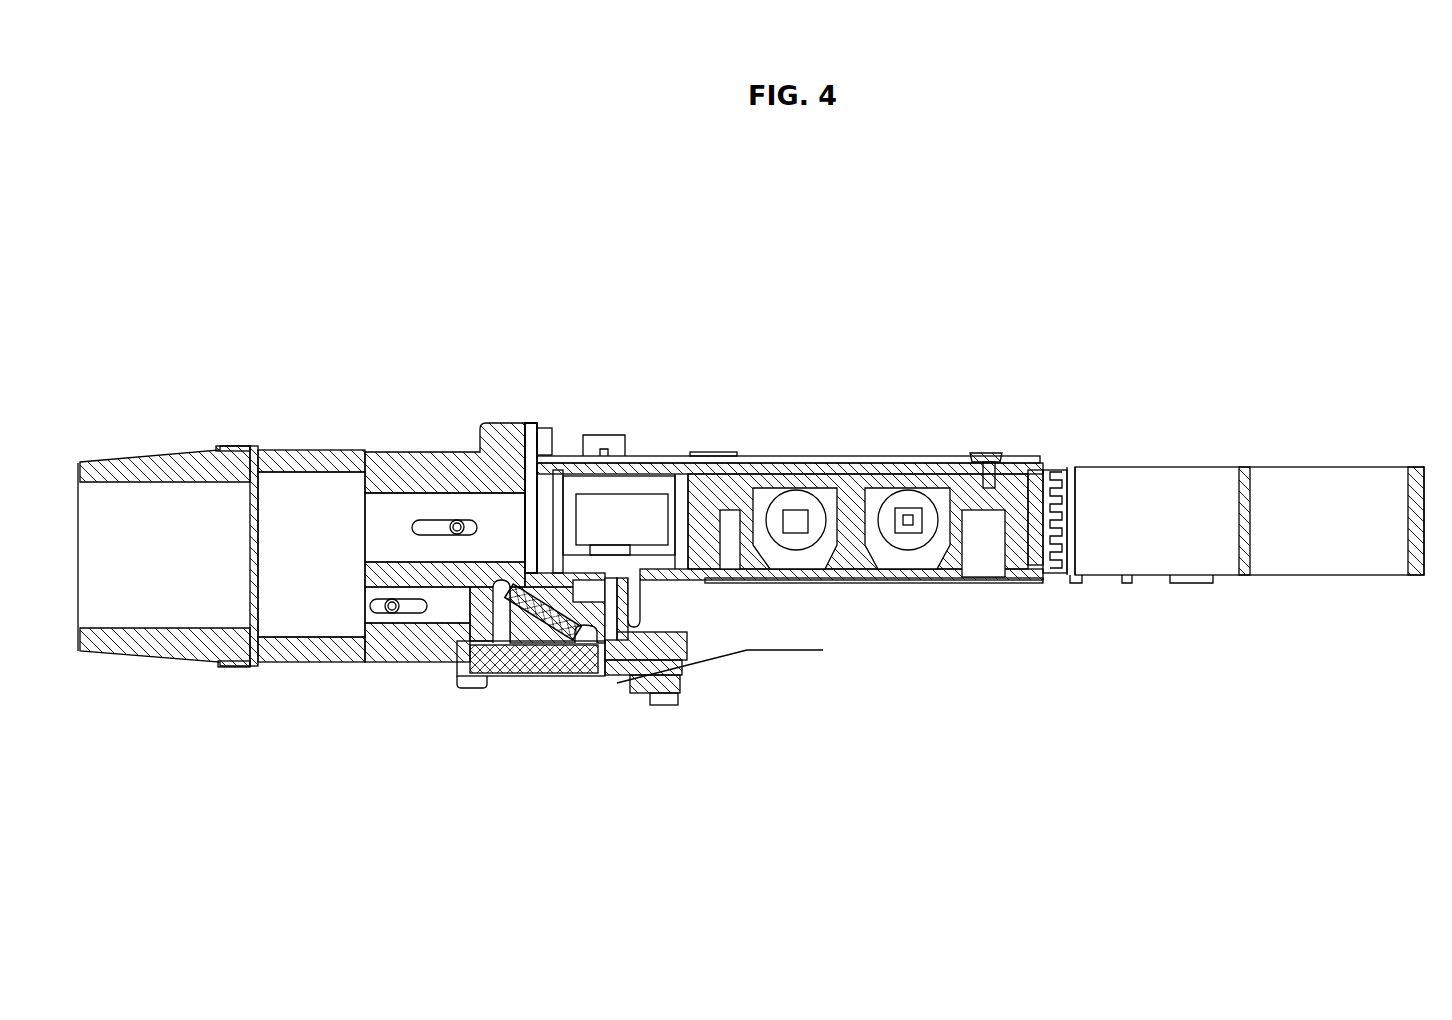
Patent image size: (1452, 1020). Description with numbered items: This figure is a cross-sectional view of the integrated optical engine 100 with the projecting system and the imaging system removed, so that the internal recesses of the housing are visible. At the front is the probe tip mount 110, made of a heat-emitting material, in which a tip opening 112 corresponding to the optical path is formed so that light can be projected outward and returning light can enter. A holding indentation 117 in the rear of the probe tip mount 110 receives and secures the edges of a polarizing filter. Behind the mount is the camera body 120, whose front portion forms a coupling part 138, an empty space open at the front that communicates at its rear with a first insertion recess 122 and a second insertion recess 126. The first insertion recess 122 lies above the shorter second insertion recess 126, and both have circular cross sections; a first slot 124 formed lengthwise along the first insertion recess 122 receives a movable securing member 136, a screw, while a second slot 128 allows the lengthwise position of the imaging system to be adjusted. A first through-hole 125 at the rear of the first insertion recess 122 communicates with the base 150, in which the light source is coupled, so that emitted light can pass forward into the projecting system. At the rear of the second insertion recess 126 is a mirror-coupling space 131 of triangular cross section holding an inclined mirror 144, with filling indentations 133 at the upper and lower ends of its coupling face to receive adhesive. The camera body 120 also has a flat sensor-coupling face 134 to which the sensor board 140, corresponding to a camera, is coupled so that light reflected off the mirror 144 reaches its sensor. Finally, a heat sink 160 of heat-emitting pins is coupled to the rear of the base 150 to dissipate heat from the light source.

The integrated optical engine 100 is at (1042, 286).
The probe tip mount 110 is at (146, 688).
The tip opening 112 is at (82, 553).
The holding indentation 117 is at (256, 455).
The camera body 120 is at (335, 420).
The first insertion recess 122 is at (510, 428).
The first slot 124 is at (428, 515).
The first through-hole 125 is at (555, 485).
The second insertion recess 126 is at (438, 660).
The second slot 128 is at (420, 647).
The mirror-coupling space 131 is at (507, 677).
The filling indentation 133 is at (527, 570).
The sensor-coupling face 134 is at (575, 585).
The securing member 136 is at (457, 518).
The coupling part 138 is at (300, 664).
The sensor board 140 is at (598, 678).
The mirror 144 is at (542, 677).
The base 150 is at (800, 420).
The heat sink 160 is at (1114, 612).